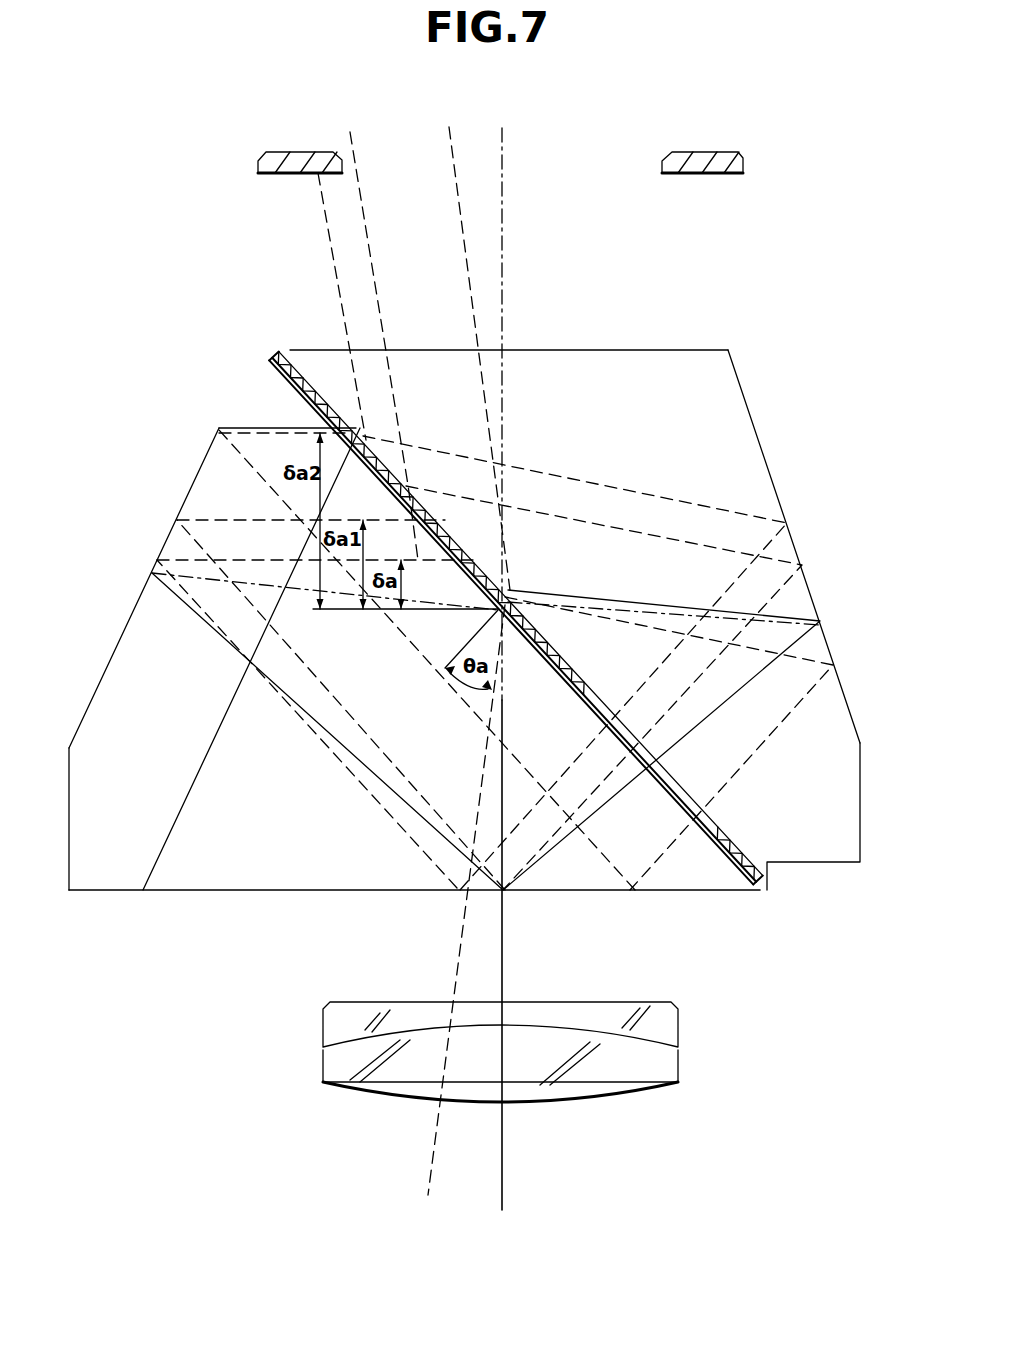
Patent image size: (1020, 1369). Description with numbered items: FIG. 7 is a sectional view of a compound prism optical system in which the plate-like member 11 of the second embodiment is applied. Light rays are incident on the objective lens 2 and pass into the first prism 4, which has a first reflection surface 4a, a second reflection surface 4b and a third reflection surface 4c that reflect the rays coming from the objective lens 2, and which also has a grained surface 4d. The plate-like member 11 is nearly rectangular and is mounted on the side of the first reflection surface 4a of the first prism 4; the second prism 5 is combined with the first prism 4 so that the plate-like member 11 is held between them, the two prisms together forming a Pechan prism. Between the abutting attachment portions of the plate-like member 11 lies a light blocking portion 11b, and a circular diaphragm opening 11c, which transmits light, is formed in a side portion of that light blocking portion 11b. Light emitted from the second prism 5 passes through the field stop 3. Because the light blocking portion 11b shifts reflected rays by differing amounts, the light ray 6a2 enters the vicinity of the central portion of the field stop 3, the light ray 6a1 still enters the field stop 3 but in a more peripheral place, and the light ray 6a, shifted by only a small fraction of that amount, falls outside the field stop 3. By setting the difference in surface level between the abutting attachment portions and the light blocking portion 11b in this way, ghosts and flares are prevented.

The objective lens 2 is at (700, 1002).
The field stop 3 is at (700, 175).
The first prism 4 is at (463, 651).
The first reflection surface 4a is at (551, 665).
The second reflection surface 4b is at (148, 602).
The third reflection surface 4c is at (403, 885).
The grained surface 4d is at (70, 862).
The second prism 5 is at (733, 427).
The light ray 6a is at (338, 290).
The light ray 6a1 is at (383, 303).
The light ray 6a2 is at (460, 210).
The plate-like member 11 is at (490, 630).
The light blocking portion 11b is at (368, 472).
The diaphragm opening 11c is at (676, 800).